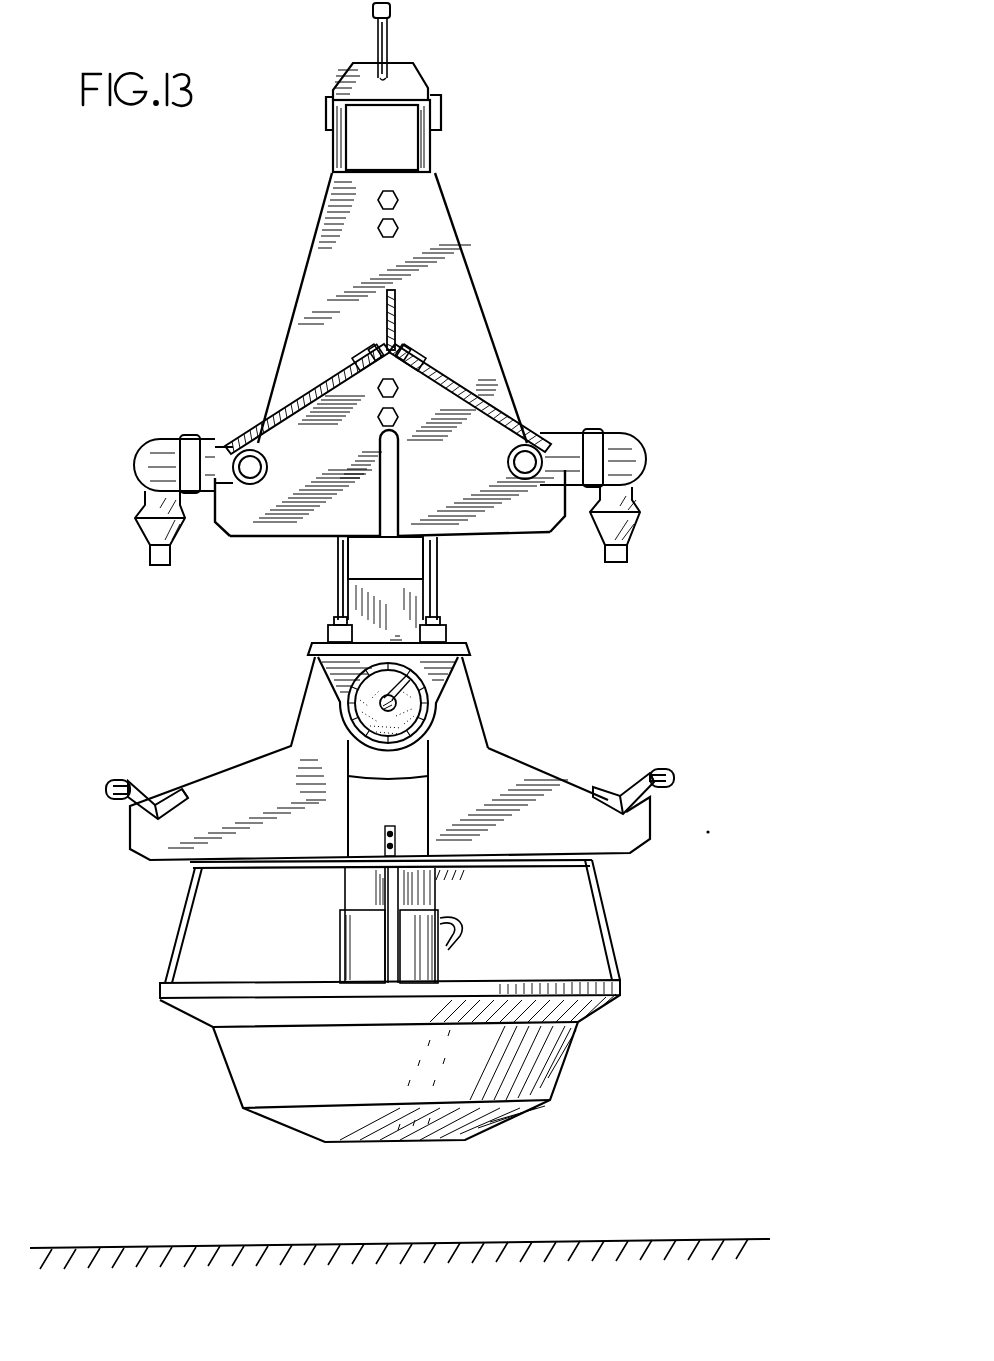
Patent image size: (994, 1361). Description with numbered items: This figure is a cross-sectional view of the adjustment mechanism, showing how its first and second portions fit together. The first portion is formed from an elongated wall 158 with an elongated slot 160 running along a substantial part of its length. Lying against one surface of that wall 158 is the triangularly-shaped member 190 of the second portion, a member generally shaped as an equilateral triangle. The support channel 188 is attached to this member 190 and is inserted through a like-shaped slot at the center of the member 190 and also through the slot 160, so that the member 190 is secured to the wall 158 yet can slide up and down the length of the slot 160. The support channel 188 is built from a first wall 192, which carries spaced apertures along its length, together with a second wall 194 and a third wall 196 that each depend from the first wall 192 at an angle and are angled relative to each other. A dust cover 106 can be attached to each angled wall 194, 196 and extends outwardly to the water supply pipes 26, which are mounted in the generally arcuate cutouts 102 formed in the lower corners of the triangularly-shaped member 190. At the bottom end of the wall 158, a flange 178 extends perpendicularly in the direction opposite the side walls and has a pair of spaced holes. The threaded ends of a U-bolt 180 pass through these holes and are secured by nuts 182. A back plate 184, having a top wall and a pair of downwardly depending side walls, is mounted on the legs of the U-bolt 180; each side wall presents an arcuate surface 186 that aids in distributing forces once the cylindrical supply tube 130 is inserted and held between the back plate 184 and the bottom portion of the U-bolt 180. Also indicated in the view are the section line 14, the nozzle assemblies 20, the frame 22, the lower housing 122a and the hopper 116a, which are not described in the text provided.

The section line 14- 14 is at (372, 30).
The spray nozzle assembly 20 is at (132, 498).
The hopper frame 22 is at (628, 905).
The water supply pipe 26 is at (237, 539).
The arcuate cutout 102 is at (250, 485).
The dust cover 106 is at (318, 394).
The hopper 116a is at (580, 1040).
The lower body housing 122a is at (562, 774).
The cylindrical supply tube 130 is at (346, 748).
The elongated wall 158 is at (380, 592).
The elongated slot 160 is at (350, 556).
The flange 178 is at (398, 636).
The U-bolt 180 is at (436, 722).
The nut 182 is at (326, 640).
The back plate 184 is at (310, 665).
The arcuate surface 186 is at (352, 692).
The support channel 188 is at (408, 318).
The triangularly-shaped member 190 is at (450, 272).
The first wall 192 is at (342, 297).
The second wall 194 is at (375, 375).
The third wall 196 is at (403, 373).